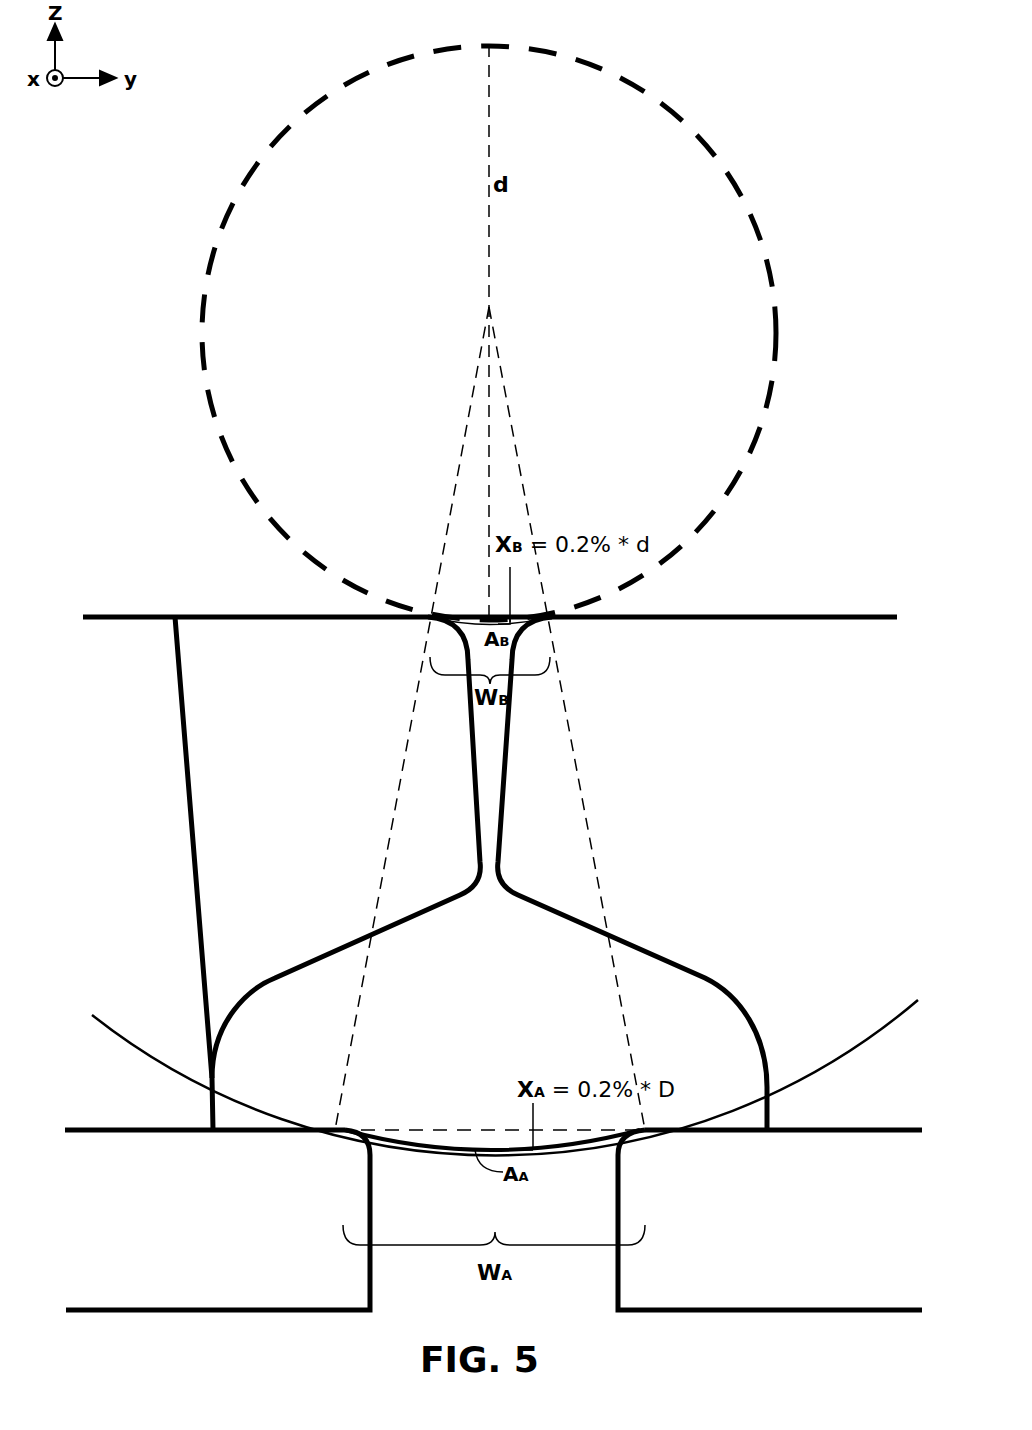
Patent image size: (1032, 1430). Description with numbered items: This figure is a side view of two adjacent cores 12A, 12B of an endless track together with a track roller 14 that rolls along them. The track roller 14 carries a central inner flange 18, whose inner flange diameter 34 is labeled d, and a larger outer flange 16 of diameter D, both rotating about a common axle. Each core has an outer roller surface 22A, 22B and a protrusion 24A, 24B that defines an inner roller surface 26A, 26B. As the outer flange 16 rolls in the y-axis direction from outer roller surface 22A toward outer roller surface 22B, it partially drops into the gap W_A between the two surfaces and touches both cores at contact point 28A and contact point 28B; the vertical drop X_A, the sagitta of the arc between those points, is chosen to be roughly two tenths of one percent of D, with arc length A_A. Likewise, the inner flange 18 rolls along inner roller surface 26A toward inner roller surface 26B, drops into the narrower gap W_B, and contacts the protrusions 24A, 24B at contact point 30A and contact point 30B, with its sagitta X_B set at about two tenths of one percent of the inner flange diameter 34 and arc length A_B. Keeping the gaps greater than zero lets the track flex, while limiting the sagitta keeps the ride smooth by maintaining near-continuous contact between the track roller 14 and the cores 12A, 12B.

The core 12A is at (218, 1232).
The core 12B is at (770, 1232).
The track roller 14 is at (600, 236).
The outer flange 16 is at (868, 1033).
The inner flange 18 is at (665, 103).
The outer roller surface 22A is at (150, 1130).
The outer roller surface 22B is at (895, 1130).
The protrusion 24A is at (154, 873).
The protrusion 24B is at (824, 725).
The inner roller surface 26A is at (210, 615).
The inner roller surface 26B is at (825, 617).
The contact point 28A is at (335, 1138).
The contact point 28B is at (650, 1138).
The contact point 30A is at (430, 614).
The contact point 30B is at (545, 617).
The inner flange diameter 34 is at (490, 306).